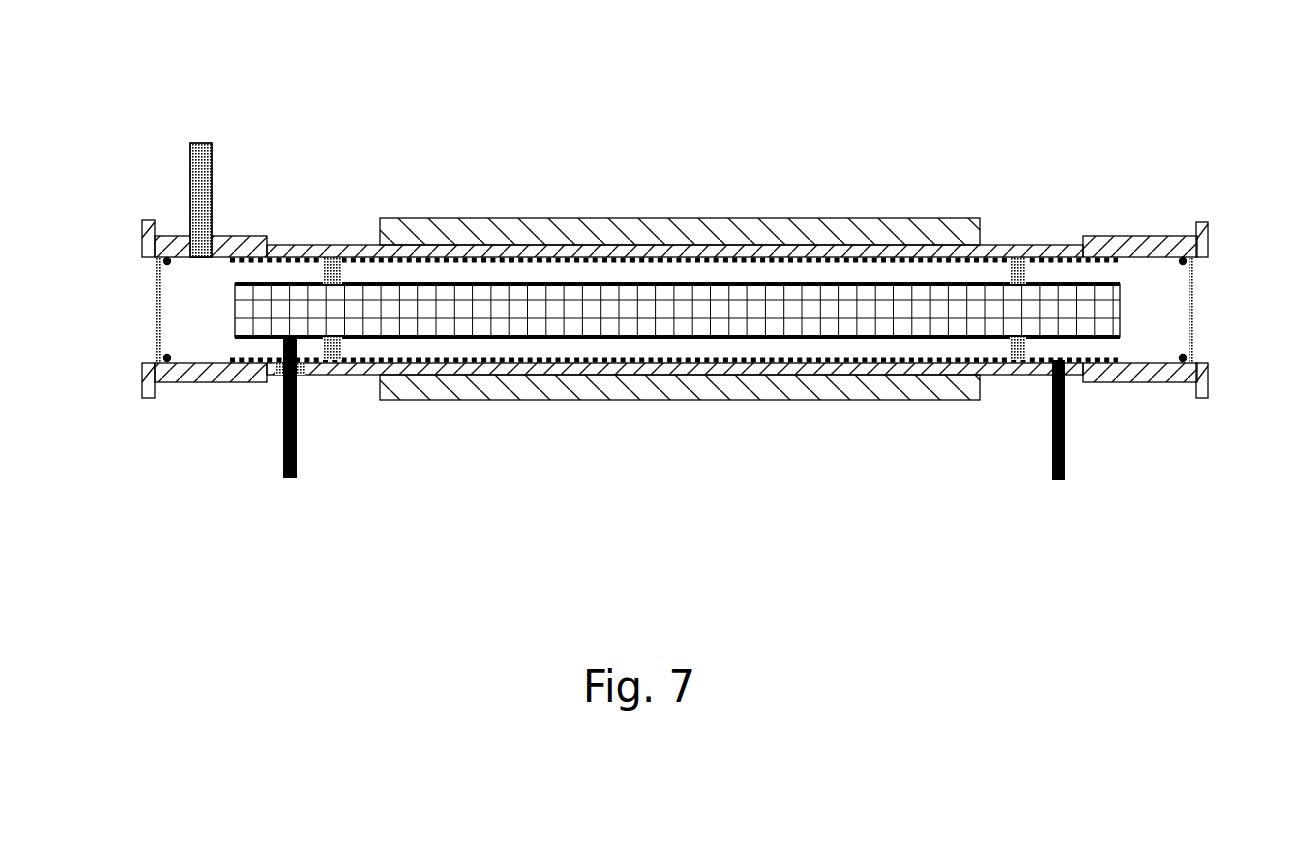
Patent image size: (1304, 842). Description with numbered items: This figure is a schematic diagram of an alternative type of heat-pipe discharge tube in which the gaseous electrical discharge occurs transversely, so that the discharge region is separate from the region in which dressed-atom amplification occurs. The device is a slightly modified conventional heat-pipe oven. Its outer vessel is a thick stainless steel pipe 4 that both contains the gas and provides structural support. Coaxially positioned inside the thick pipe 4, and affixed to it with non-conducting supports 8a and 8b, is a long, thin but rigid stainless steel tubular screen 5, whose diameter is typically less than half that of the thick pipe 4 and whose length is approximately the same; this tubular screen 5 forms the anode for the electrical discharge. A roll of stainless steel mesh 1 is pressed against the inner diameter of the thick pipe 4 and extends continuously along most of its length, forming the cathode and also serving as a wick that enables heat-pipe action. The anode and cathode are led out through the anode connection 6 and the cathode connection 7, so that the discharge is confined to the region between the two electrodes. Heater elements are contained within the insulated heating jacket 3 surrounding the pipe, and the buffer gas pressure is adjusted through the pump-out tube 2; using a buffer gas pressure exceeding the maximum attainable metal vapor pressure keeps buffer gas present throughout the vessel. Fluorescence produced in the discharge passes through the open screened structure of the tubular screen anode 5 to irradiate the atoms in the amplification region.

The stainless steel mesh 1 is at (815, 255).
The pump-out tube 2 is at (157, 88).
The insulated heating jacket 3 is at (805, 397).
The thick stainless steel pipe 4 is at (637, 243).
The stainless steel tubular screen 5 is at (381, 284).
The anode connection 6 is at (282, 437).
The cathode connection 7 is at (978, 485).
The non-conducting support 8a is at (1088, 192).
The non-conducting support 8b is at (328, 258).